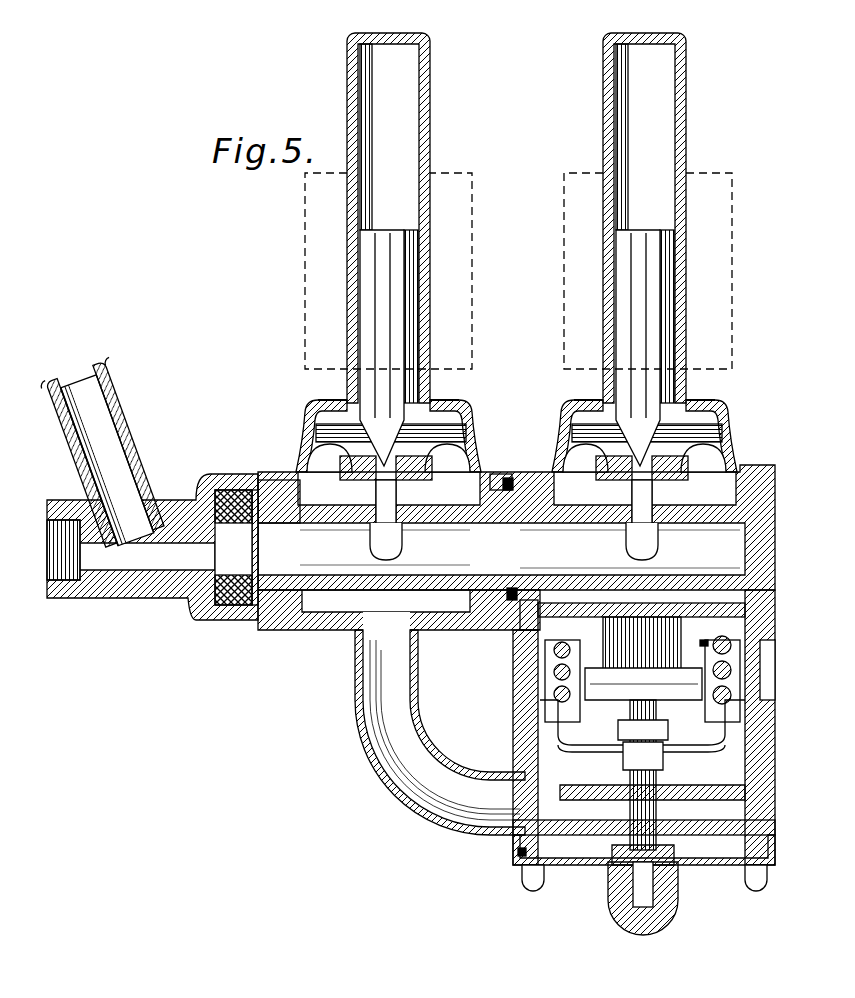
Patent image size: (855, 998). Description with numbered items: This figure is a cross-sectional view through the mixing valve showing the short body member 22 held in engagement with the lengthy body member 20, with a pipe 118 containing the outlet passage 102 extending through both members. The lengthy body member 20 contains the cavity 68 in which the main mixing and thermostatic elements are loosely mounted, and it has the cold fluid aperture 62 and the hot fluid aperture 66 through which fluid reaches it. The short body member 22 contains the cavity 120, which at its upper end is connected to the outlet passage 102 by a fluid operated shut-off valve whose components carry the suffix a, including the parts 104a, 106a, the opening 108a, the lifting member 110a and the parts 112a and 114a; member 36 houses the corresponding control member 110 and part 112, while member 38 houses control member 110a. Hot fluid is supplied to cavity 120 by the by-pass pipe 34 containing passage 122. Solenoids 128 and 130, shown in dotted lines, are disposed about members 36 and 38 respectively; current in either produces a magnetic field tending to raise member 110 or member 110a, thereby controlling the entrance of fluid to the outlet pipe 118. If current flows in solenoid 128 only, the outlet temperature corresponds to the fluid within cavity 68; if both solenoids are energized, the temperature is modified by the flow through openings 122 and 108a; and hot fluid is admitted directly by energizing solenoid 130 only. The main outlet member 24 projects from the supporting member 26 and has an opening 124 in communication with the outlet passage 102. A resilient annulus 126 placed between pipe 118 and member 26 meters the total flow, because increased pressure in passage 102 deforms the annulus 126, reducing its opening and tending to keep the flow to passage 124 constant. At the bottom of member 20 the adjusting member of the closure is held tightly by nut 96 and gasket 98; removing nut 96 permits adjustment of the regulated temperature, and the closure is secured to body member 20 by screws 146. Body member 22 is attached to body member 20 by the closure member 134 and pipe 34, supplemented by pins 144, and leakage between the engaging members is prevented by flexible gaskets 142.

The lengthy body member 20 is at (528, 475).
The short body member 22 is at (502, 474).
The main outlet member 24 is at (130, 445).
The supporting member 26 is at (107, 600).
The by-pass pipe 34 is at (362, 768).
The control member 36 is at (688, 86).
The control member 38 is at (431, 128).
The cold fluid aperture 62 is at (762, 672).
The hot fluid aperture 66 is at (768, 812).
The cavity 68 is at (733, 460).
The nut 96 is at (640, 935).
The gasket 98 is at (686, 875).
The outlet passage 102 is at (255, 640).
The bell cap 104a is at (310, 445).
The passage 106a is at (384, 548).
The opening 108a is at (352, 493).
The control member 110 is at (655, 398).
The control member 110a is at (410, 398).
The flange 112 is at (724, 410).
The flange 112a is at (463, 415).
The diaphragm 114a is at (318, 424).
The pipe 118 is at (276, 497).
The cavity 120 is at (452, 526).
The passage 122 is at (396, 668).
The opening 124 is at (120, 450).
The resilient annulus 126 is at (182, 604).
The solenoid 128 is at (722, 173).
The solenoid 130 is at (473, 195).
The closure member 134 is at (722, 432).
The gasket 142 is at (258, 630).
The pin 144 is at (500, 620).
The screw 146 is at (545, 880).